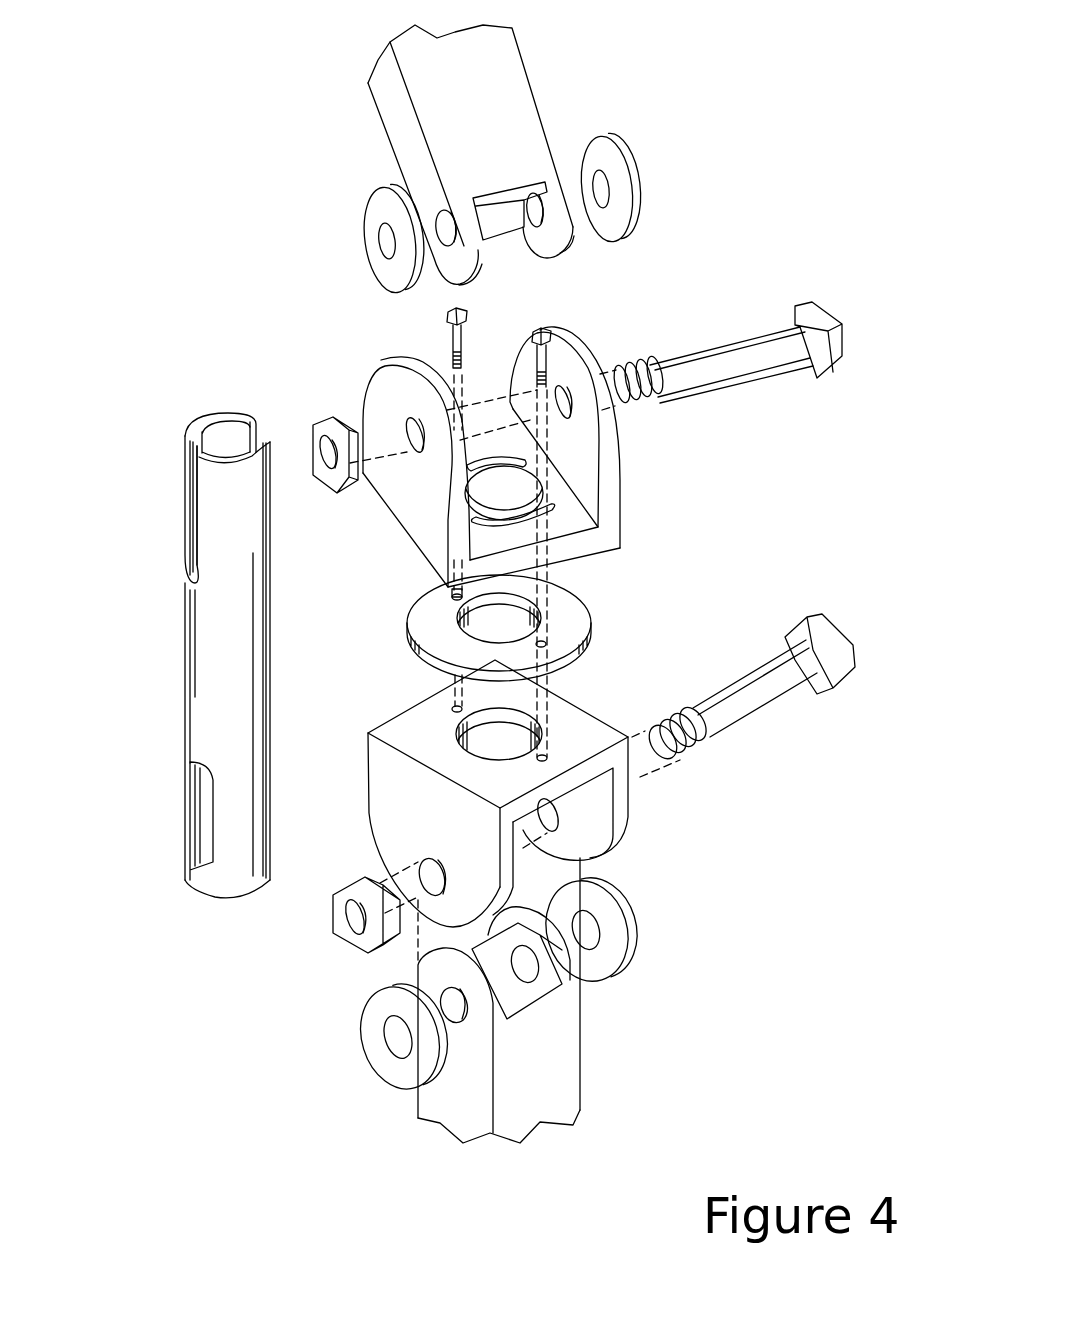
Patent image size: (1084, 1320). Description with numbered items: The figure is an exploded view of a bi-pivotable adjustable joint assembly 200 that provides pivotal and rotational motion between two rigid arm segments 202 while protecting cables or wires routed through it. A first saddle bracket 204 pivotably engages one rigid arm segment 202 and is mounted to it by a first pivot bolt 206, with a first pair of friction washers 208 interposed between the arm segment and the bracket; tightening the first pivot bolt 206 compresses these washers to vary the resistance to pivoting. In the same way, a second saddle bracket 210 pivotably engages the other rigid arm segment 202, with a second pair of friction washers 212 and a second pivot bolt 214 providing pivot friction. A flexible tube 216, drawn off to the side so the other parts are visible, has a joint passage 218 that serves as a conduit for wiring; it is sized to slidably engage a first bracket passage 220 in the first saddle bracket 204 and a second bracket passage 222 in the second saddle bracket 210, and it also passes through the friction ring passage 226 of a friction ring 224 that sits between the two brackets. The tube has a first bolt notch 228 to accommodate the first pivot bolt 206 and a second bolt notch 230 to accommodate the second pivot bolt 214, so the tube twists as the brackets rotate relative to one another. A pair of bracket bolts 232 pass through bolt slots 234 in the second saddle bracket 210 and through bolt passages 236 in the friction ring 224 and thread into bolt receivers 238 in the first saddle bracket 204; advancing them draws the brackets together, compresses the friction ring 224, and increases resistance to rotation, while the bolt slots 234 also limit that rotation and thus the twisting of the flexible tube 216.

The adjustable joint assembly 200 is at (818, 200).
The rigid arm segments 202 is at (520, 85).
The first saddle bracket 204 is at (592, 703).
The first pivot bolt 206 is at (767, 670).
The first pair of friction washers 208 is at (604, 968).
The second saddle bracket 210 is at (648, 500).
The second pair of friction washers 212 is at (378, 204).
The second pivot bolt 214 is at (752, 340).
The flexible tube 216 is at (222, 950).
The joint passage 218 is at (223, 448).
The first bracket passage 220 is at (473, 737).
The second bracket passage 222 is at (522, 492).
The friction ring 224 is at (605, 612).
The friction ring passage 226 is at (513, 617).
The first bolt notch 228 is at (190, 862).
The second bolt notch 230 is at (188, 515).
The bracket bolts 232 is at (540, 330).
The bolt slots 234 is at (455, 593).
The bolt passages 236 is at (540, 645).
The bolt receivers 238 is at (540, 758).